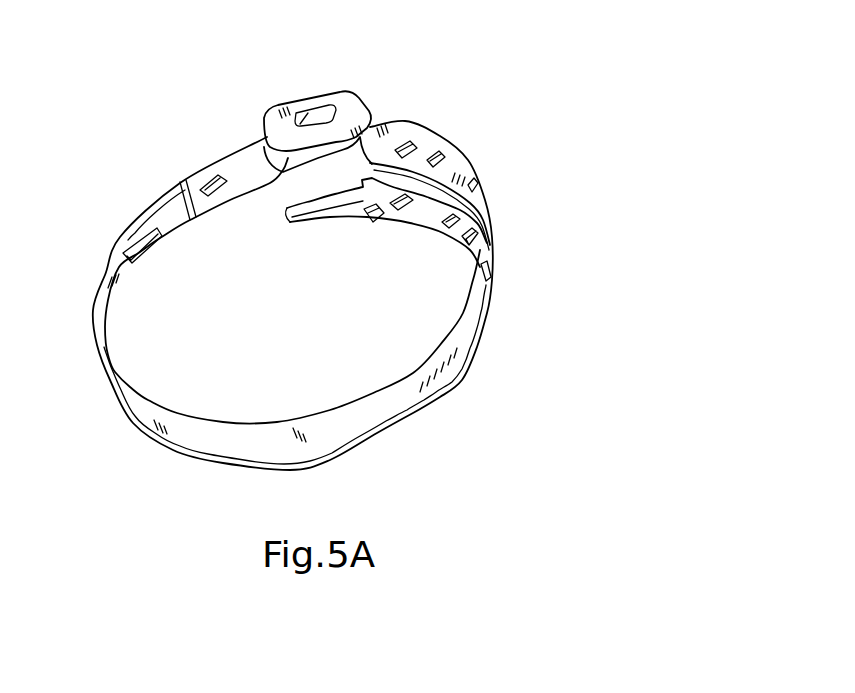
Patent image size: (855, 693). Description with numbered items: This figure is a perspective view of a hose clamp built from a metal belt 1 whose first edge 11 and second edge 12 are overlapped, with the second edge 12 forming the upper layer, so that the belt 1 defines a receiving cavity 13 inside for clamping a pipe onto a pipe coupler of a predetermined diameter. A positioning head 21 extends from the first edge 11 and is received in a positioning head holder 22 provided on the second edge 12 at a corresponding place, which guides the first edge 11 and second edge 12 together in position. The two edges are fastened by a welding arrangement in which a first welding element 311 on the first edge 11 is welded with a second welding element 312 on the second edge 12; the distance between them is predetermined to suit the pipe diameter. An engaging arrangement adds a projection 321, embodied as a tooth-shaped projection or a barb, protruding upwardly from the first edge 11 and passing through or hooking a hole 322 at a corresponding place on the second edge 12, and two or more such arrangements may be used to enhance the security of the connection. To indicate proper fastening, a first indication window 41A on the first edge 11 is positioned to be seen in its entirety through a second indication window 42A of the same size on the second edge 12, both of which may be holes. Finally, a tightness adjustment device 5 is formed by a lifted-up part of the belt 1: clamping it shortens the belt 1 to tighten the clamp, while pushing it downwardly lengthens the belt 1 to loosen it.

The metal belt 1 is at (376, 434).
The first edge 11 is at (424, 264).
The second edge 12 is at (470, 145).
The receiving cavity 13 is at (274, 359).
The positioning head 21 is at (409, 233).
The positioning head holder 22 is at (147, 172).
The tightness adjustment device 5 is at (330, 92).
The first indication window 41A is at (367, 212).
The second indication window 42A is at (208, 170).
The first welding element 311 is at (486, 268).
The second welding element 312 is at (474, 193).
The projection 321 is at (460, 217).
The hole 322 is at (446, 158).